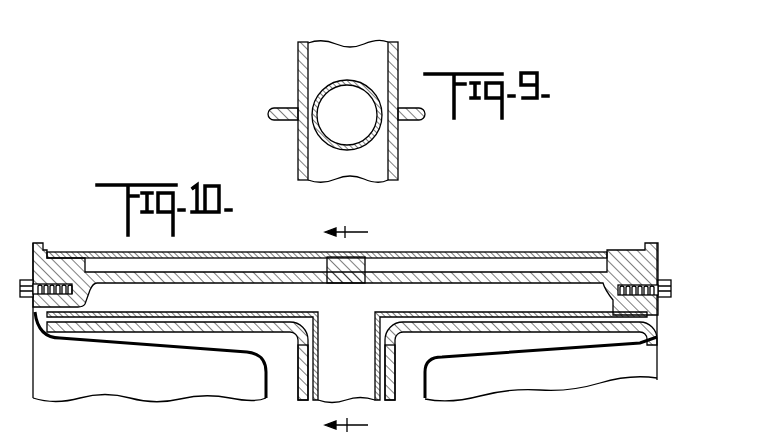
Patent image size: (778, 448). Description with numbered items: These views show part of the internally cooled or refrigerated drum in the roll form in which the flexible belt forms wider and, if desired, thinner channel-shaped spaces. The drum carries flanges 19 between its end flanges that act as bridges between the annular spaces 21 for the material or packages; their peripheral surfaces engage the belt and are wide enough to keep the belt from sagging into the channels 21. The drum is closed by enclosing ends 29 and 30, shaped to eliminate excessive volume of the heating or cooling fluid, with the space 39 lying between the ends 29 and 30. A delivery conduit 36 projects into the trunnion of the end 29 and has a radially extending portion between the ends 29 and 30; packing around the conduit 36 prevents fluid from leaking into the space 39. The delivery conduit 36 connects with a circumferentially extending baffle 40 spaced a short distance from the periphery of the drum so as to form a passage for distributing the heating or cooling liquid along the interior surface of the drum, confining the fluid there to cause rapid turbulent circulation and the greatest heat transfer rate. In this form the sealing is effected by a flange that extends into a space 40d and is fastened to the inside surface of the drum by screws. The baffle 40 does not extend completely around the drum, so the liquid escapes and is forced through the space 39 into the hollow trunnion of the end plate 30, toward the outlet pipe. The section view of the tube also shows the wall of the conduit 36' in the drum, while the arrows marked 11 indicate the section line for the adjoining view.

In FIG. 9, the enclosing end 29 is at (297, 82).
In FIG. 10, the enclosing end 29 is at (298, 368).
In FIG. 9, the enclosing end 30 is at (398, 153).
In FIG. 10, the enclosing end 30 is at (495, 332).
In FIG. 9, the delivery conduit 36 is at (347, 99).
In FIG. 10, the inner tube 36' is at (347, 356).
In FIG. 9, the space 39 is at (368, 164).
In FIG. 10, the flange 19 is at (327, 267).
In FIG. 10, the annular space 21 is at (233, 253).
In FIG. 10, the baffle 40 is at (198, 314).
In FIG. 10, the space 40d is at (476, 297).
In FIG. 10, the section line 11 is at (352, 328).